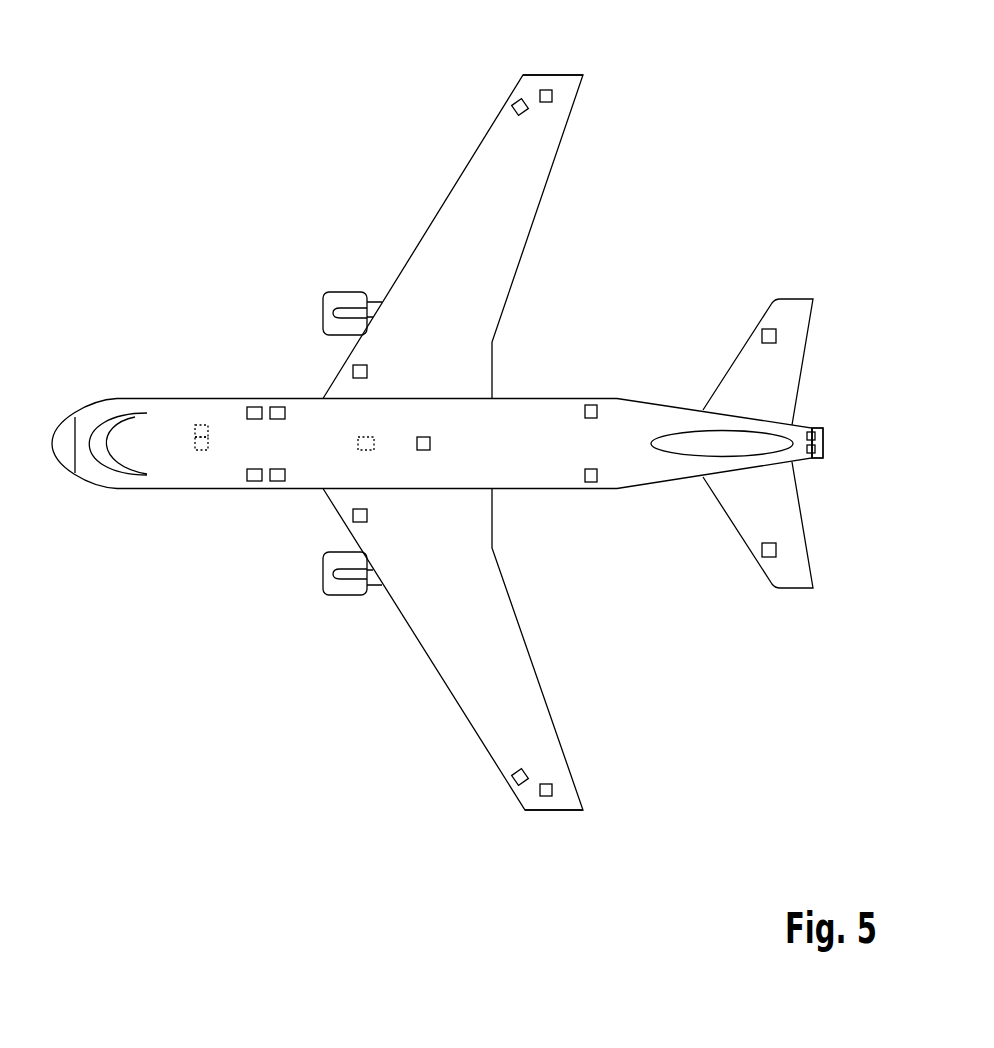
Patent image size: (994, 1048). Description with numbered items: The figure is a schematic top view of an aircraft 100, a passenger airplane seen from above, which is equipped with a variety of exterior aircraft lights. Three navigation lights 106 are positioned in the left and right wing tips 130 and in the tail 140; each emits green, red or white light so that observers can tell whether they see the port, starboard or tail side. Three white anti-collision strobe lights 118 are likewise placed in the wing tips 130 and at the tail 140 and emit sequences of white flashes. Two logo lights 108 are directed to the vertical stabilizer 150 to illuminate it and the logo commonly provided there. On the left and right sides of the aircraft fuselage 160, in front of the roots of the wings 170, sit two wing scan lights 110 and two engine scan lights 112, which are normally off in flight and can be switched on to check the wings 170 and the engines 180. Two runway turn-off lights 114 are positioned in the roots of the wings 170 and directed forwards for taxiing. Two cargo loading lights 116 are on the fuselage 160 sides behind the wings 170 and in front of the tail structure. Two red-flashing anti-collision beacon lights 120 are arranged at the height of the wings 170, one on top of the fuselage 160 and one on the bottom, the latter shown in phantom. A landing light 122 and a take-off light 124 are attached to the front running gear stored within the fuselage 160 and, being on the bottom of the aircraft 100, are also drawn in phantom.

The aircraft 100 is at (474, 443).
The navigation lights 106 is at (512, 104).
The logo lights 108 is at (762, 336).
The wing scan lights 110 is at (247, 413).
The engine scan lights 112 is at (285, 413).
The runway turn-off lights 114 is at (367, 371).
The cargo loading lights 116 is at (585, 411).
The white anti-collision strobe lights 118 is at (546, 90).
The red-flashing anti-collision beacon lights 120 is at (374, 450).
The landing light 122 is at (200, 452).
The take-off light 124 is at (197, 425).
The wing tips 130 is at (510, 70).
The tail 140 is at (830, 447).
The vertical stabilizer 150 is at (695, 442).
The aircraft fuselage 160 is at (568, 375).
The wings 170 is at (423, 198).
The engines 180 is at (318, 275).